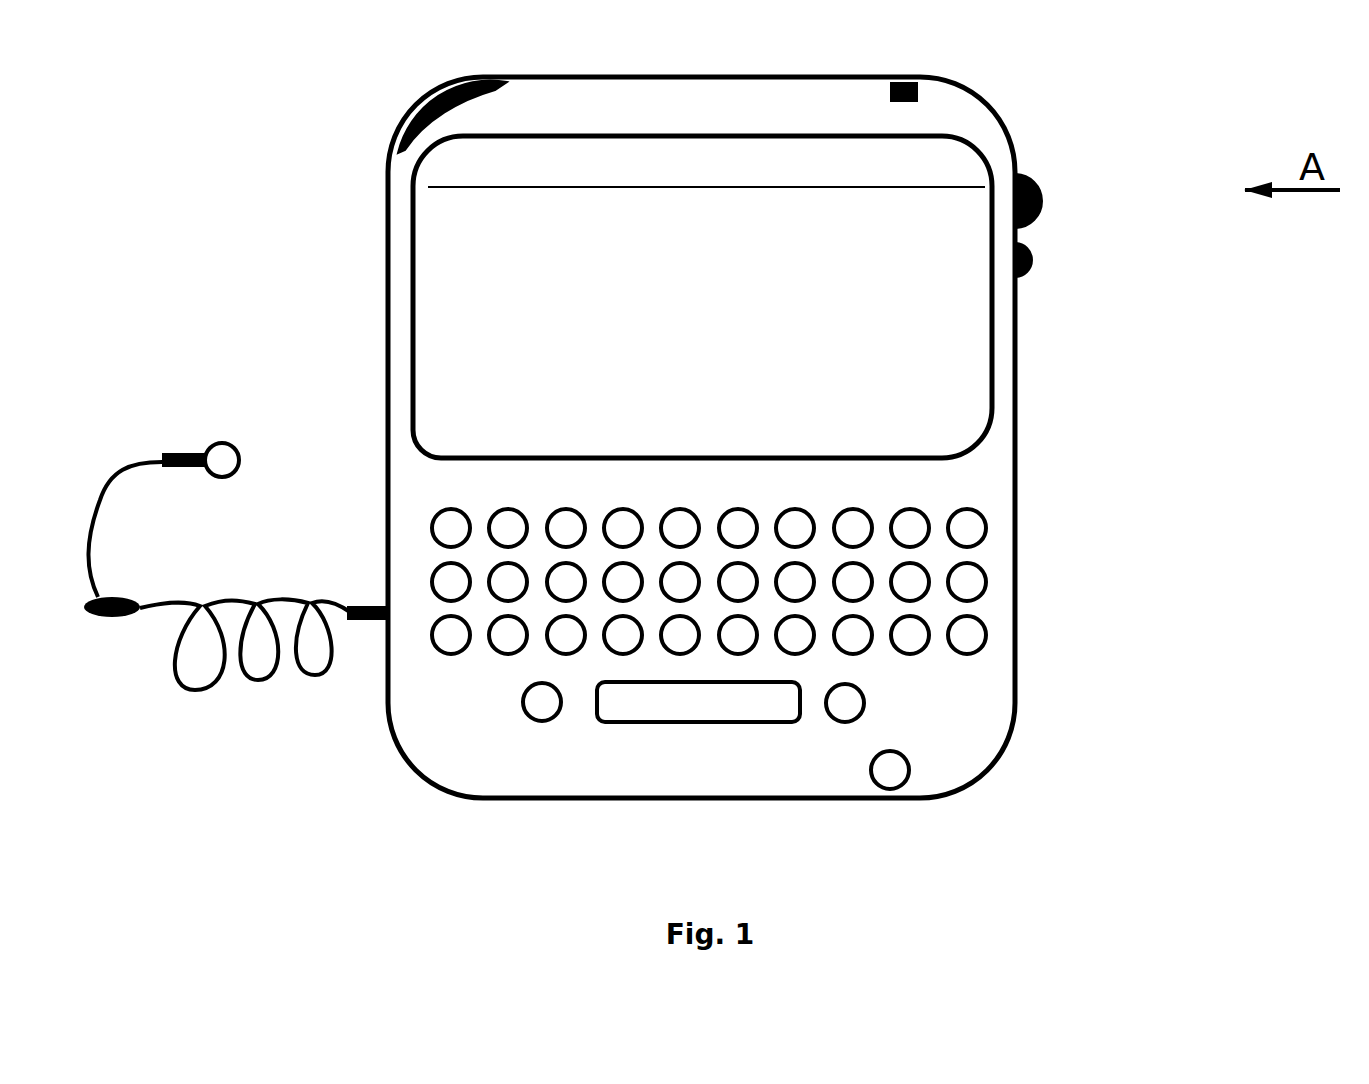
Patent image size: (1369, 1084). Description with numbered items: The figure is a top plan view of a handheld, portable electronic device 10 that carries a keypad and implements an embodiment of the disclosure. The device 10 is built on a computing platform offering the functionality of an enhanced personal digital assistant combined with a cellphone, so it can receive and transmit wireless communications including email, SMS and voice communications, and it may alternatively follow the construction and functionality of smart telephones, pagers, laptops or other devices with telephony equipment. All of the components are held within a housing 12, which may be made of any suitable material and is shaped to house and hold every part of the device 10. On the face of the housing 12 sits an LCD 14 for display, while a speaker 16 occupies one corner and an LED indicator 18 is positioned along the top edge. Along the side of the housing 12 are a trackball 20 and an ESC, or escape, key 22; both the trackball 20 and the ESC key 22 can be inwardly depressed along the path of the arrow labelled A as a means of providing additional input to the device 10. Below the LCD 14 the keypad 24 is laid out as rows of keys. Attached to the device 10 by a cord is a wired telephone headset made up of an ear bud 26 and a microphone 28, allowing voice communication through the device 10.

The portable electronic device 10 is at (636, 501).
The housing 12 is at (940, 768).
The LCD 14 is at (418, 440).
The speaker 16 is at (415, 112).
The LED indicator 18 is at (925, 92).
The trackball 20 is at (1043, 202).
The ESC key 22 is at (1036, 263).
The keypad 24 is at (1000, 592).
The ear bud 26 is at (258, 452).
The microphone 28 is at (124, 632).